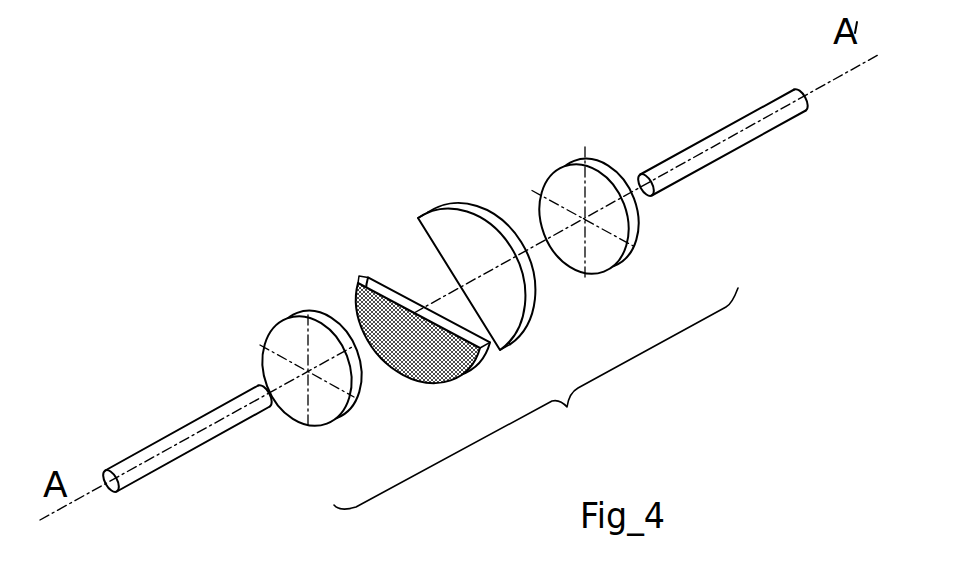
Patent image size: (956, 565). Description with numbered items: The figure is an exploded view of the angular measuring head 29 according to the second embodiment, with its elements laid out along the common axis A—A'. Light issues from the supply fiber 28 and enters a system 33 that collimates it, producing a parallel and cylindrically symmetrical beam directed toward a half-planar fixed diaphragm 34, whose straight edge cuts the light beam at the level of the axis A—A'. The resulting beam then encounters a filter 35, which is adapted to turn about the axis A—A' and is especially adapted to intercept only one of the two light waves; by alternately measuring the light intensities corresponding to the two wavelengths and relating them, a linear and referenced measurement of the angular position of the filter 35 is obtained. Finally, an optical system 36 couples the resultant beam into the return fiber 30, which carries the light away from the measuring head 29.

The supply fiber 28 is at (210, 423).
The measuring head 29 is at (536, 398).
The return fiber 30 is at (695, 153).
The system 33 is at (292, 333).
The half-planar fixed diaphragm 34 is at (368, 277).
The filter 35 is at (457, 235).
The optical system 36 is at (572, 192).